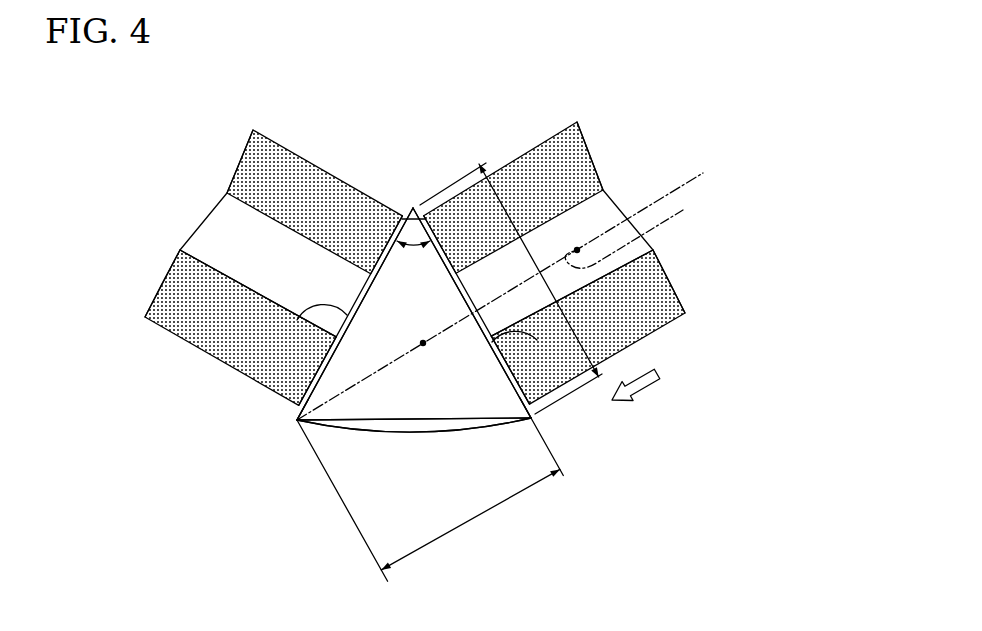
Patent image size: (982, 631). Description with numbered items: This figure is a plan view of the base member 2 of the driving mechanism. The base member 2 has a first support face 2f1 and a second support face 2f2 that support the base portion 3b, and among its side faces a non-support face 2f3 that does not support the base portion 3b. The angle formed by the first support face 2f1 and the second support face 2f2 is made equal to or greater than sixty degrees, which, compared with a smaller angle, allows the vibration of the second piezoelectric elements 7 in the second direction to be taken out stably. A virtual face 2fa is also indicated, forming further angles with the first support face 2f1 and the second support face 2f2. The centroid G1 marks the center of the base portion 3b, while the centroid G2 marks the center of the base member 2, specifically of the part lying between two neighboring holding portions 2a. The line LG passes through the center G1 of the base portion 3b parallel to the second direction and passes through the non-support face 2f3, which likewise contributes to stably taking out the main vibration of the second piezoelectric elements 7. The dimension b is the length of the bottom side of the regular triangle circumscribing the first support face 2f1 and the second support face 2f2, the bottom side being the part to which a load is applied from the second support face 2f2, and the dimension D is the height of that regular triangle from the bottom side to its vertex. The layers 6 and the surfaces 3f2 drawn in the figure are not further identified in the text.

The base member 2 is at (418, 442).
The first support face 2f1 is at (252, 380).
The second support face 2f2 is at (582, 393).
The non-support face 2f3 is at (363, 432).
The virtual face 2fa is at (480, 424).
The holding portion 2a is at (279, 408).
The adhesive layer 6 is at (380, 243).
The second piezoelectric element 7 is at (273, 167).
The base portion 3b is at (176, 332).
The inner surface of light guide 3f2 is at (247, 257).
The centroid of the base portion G1 is at (579, 247).
The centroid of the base member G2 is at (423, 341).
The line LG is at (674, 214).
The length of the bottom side b is at (511, 288).
The height of the regular triangle D is at (430, 499).